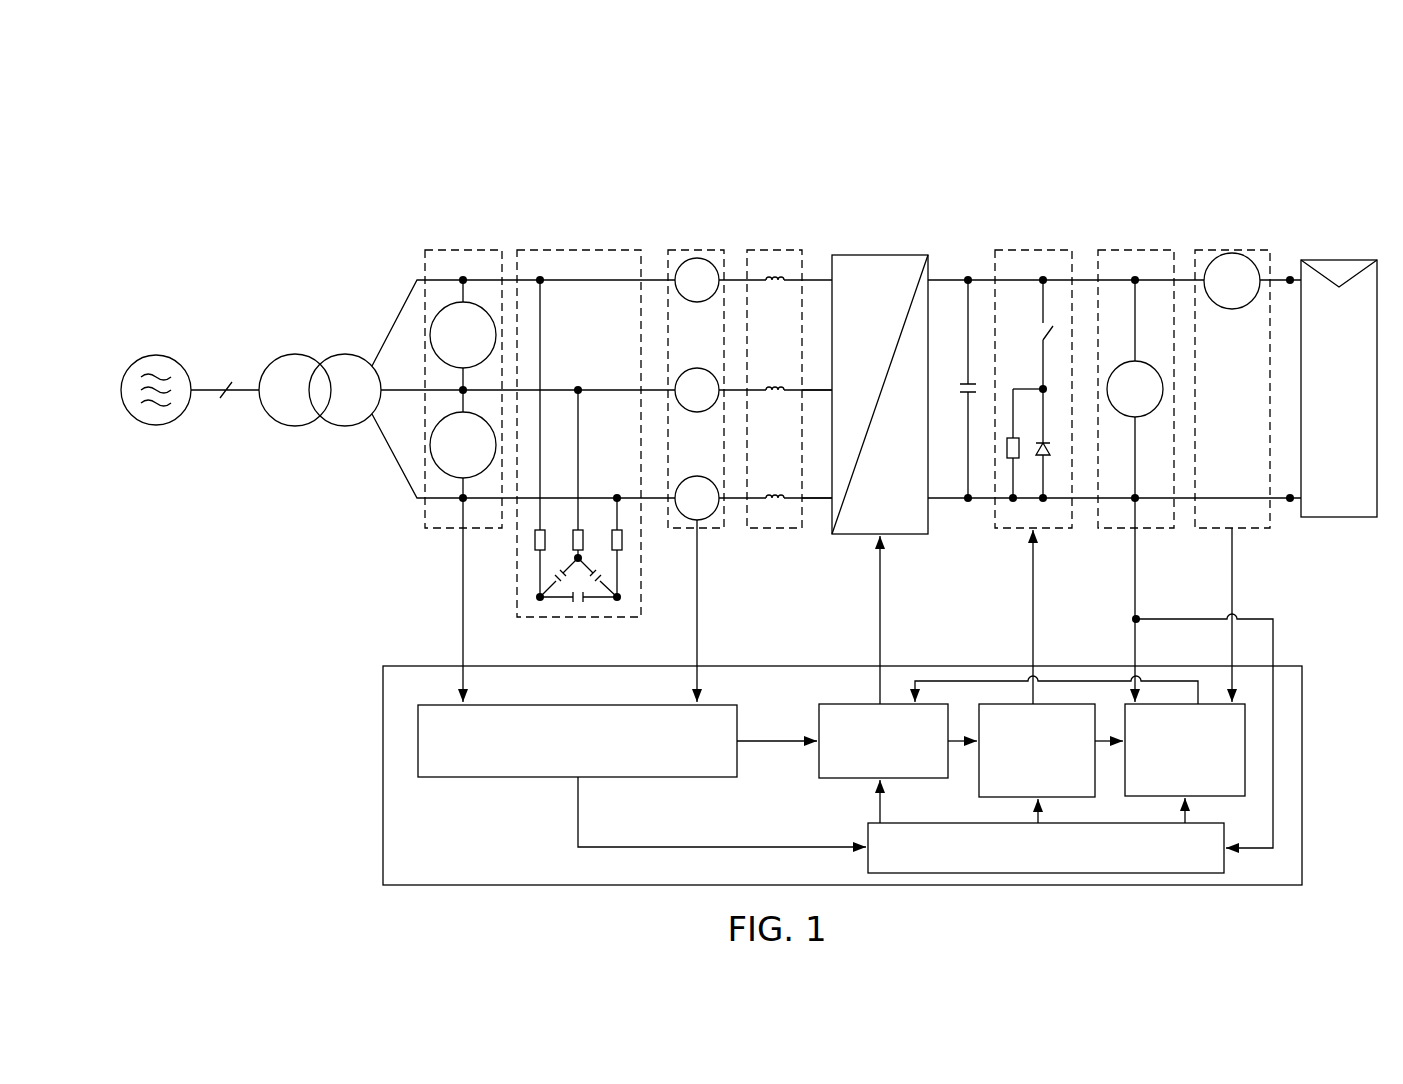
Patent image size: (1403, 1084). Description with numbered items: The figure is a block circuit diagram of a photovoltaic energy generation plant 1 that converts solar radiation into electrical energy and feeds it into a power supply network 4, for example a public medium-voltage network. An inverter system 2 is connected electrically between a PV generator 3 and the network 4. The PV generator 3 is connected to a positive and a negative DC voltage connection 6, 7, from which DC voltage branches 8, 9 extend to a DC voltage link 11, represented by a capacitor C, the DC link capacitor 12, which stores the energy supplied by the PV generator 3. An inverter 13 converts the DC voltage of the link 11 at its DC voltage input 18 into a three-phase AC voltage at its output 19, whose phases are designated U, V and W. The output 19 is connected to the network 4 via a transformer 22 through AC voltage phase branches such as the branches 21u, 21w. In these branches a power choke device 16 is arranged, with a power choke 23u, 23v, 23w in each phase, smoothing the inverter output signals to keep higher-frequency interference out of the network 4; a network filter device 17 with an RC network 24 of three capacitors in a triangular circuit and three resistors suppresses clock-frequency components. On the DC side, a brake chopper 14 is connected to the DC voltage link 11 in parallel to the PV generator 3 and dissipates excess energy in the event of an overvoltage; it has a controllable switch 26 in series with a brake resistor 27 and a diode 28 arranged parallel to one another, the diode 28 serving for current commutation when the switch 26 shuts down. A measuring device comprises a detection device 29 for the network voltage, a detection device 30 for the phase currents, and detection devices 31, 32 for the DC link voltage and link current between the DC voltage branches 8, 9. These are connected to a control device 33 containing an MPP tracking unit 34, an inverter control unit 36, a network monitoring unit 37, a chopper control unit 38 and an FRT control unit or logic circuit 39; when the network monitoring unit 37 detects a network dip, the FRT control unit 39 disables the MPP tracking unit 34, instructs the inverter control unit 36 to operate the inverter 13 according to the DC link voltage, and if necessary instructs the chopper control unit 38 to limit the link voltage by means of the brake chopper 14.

The photovoltaic energy generation plant 1 is at (1228, 122).
The inverter system 2 is at (1167, 240).
The PV generator 3 is at (1360, 255).
The power supply network 4 is at (150, 348).
The positive DC voltage connection 6 is at (1290, 278).
The negative DC voltage connection 7 is at (1290, 500).
The DC voltage branch 8 is at (1086, 280).
The DC voltage branch 9 is at (1087, 500).
The DC voltage link 11 is at (959, 346).
The DC link capacitor 12 is at (962, 384).
The inverter 13 is at (875, 400).
The brake chopper 14 is at (1031, 382).
The power choke device 16 is at (778, 326).
The network filter device 17 is at (520, 387).
The DC voltage input 18 is at (936, 480).
The output 19 is at (824, 525).
The AC voltage phase branch 21u is at (818, 387).
The AC voltage phase branch 21w is at (818, 500).
The transformer 22 is at (297, 355).
The power choke 23u is at (775, 275).
The power choke 23v is at (775, 385).
The power choke 23w is at (775, 493).
The RC network 24 is at (535, 573).
The controllable switch 26 is at (1045, 333).
The brake resistor 27 is at (1005, 448).
The diode 28 is at (1050, 449).
The detection device 29 is at (462, 250).
The detection device 30 is at (697, 250).
The detection device 31 is at (1135, 250).
The detection device 32 is at (1219, 252).
The control device 33 is at (796, 691).
The MPP tracking unit 34 is at (1207, 704).
The inverter control unit 36 is at (848, 704).
The network monitoring unit 37 is at (658, 705).
The chopper control unit 38 is at (1003, 704).
The FRT control unit or logic circuit 39 is at (868, 858).